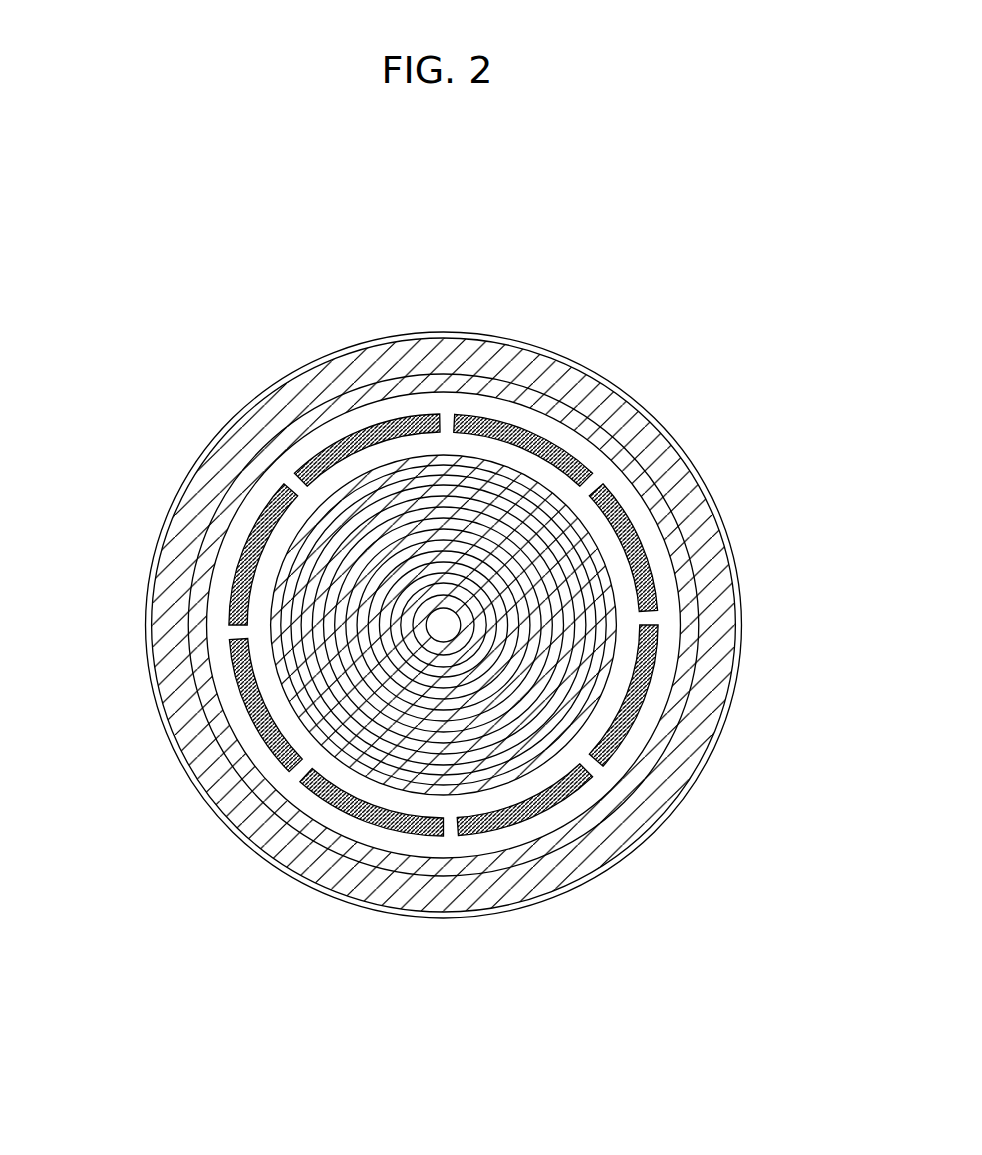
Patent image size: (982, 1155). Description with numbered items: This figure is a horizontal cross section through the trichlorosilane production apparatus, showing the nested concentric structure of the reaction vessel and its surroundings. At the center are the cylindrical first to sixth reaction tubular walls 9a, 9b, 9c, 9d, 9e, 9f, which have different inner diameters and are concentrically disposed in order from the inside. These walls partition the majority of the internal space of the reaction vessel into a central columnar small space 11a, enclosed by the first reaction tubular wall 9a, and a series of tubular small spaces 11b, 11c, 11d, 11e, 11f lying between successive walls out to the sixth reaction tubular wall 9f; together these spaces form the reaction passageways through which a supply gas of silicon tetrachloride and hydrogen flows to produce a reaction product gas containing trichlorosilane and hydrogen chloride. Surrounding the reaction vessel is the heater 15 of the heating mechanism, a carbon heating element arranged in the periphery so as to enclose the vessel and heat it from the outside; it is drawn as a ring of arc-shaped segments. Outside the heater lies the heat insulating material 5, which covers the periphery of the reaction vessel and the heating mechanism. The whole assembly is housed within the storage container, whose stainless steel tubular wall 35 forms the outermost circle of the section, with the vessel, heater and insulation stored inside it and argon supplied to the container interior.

The tubular wall 35 is at (503, 336).
The heat insulating material 5 is at (660, 483).
The heater 15 is at (653, 671).
The first reaction tubular wall 9a is at (448, 600).
The second reaction tubular wall 9b is at (427, 580).
The third reaction tubular wall 9c is at (375, 583).
The fourth reaction tubular wall 9d is at (385, 680).
The fifth reaction tubular wall 9e is at (357, 692).
The sixth reaction tubular wall 9f is at (287, 557).
The central columnar small space 11a is at (393, 793).
The tubular small space 11b is at (445, 658).
The tubular small space 11c is at (482, 668).
The tubular small space 11d is at (653, 530).
The tubular small space 11e is at (563, 608).
The tubular small space 11f is at (565, 712).